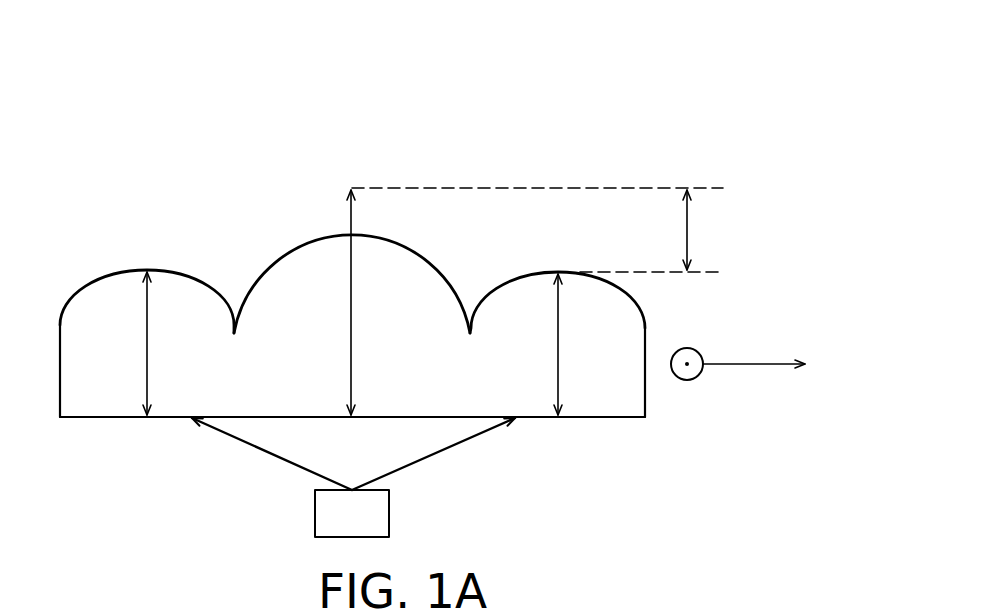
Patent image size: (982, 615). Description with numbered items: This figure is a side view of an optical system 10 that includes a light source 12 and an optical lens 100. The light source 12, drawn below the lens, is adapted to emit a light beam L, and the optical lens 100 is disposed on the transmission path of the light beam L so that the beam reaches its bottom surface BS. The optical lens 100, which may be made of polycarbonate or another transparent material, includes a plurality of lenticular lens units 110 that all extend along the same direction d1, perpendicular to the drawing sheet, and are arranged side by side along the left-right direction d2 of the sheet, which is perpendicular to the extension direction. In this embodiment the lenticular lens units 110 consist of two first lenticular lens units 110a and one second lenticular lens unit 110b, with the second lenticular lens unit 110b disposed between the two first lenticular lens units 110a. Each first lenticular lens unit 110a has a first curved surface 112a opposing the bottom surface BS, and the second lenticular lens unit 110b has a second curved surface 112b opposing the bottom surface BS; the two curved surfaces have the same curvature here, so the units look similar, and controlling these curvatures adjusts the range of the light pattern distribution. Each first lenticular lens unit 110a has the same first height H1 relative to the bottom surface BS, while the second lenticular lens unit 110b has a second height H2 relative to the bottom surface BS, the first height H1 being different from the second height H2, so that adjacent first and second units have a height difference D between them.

The optical system 10 is at (610, 475).
The optical lens 100 is at (527, 60).
The lenticular lens units 110 is at (340, 203).
The first lenticular lens unit 110a is at (192, 297).
The second lenticular lens unit 110b is at (372, 205).
The first curved surface 112a is at (102, 283).
The second curved surface 112b is at (272, 215).
The light source 12 is at (320, 517).
The light beam L is at (433, 455).
The bottom surface BS is at (108, 418).
The first height H1 is at (336, 343).
The second height H2 is at (370, 302).
The height difference D is at (537, 230).
The direction d1 is at (687, 342).
The left-right direction d2 is at (772, 350).